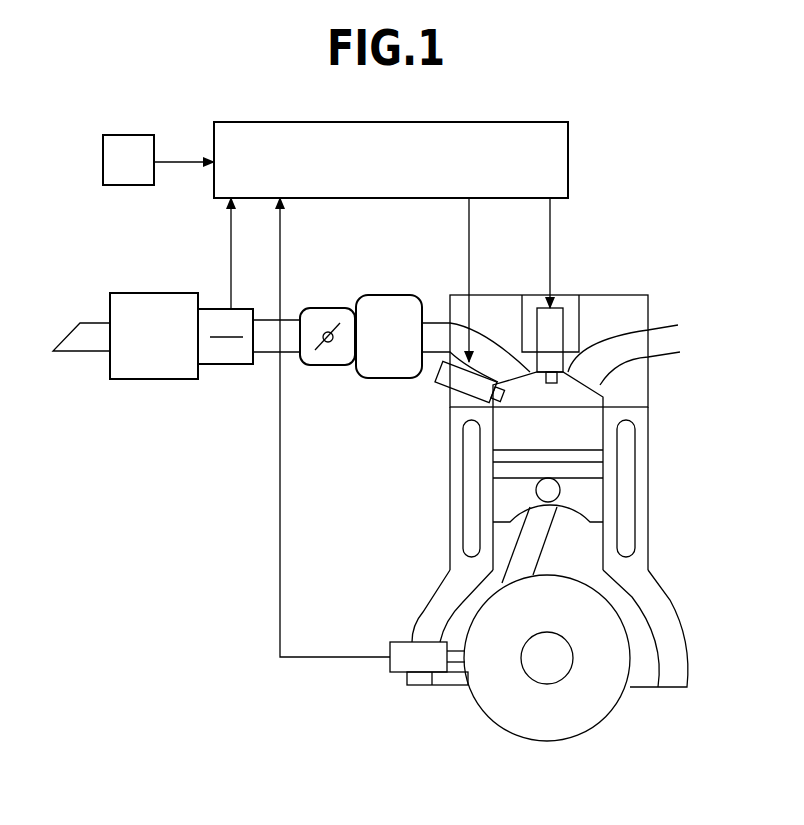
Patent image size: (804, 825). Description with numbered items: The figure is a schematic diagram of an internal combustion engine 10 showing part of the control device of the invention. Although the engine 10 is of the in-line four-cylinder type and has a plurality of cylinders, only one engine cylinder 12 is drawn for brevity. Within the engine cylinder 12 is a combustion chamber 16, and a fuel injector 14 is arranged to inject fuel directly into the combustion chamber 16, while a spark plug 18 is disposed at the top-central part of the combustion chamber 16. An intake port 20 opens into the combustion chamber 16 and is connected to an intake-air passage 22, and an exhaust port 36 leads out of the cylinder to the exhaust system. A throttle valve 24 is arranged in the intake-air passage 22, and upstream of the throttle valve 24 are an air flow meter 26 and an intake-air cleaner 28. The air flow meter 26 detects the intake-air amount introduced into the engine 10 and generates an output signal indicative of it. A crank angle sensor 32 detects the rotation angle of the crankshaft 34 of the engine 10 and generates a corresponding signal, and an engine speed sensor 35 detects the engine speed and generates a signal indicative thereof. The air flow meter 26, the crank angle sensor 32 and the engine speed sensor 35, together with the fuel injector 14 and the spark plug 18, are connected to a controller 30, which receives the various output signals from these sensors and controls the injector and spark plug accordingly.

The engine 10 is at (637, 425).
The engine cylinder 12 is at (593, 530).
The fuel injector 14 is at (447, 385).
The combustion chamber 16 is at (575, 400).
The spark plug 18 is at (557, 318).
The intake port 20 is at (485, 348).
The intake-air passage 22 is at (268, 355).
The throttle valve 24 is at (333, 353).
The air flow meter 26 is at (223, 350).
The intake-air cleaner 28 is at (143, 362).
The controller 30 is at (568, 158).
The crank angle sensor 32 is at (402, 662).
The crankshaft 34 is at (552, 662).
The engine speed sensor 35 is at (127, 168).
The exhaust port 36 is at (619, 350).